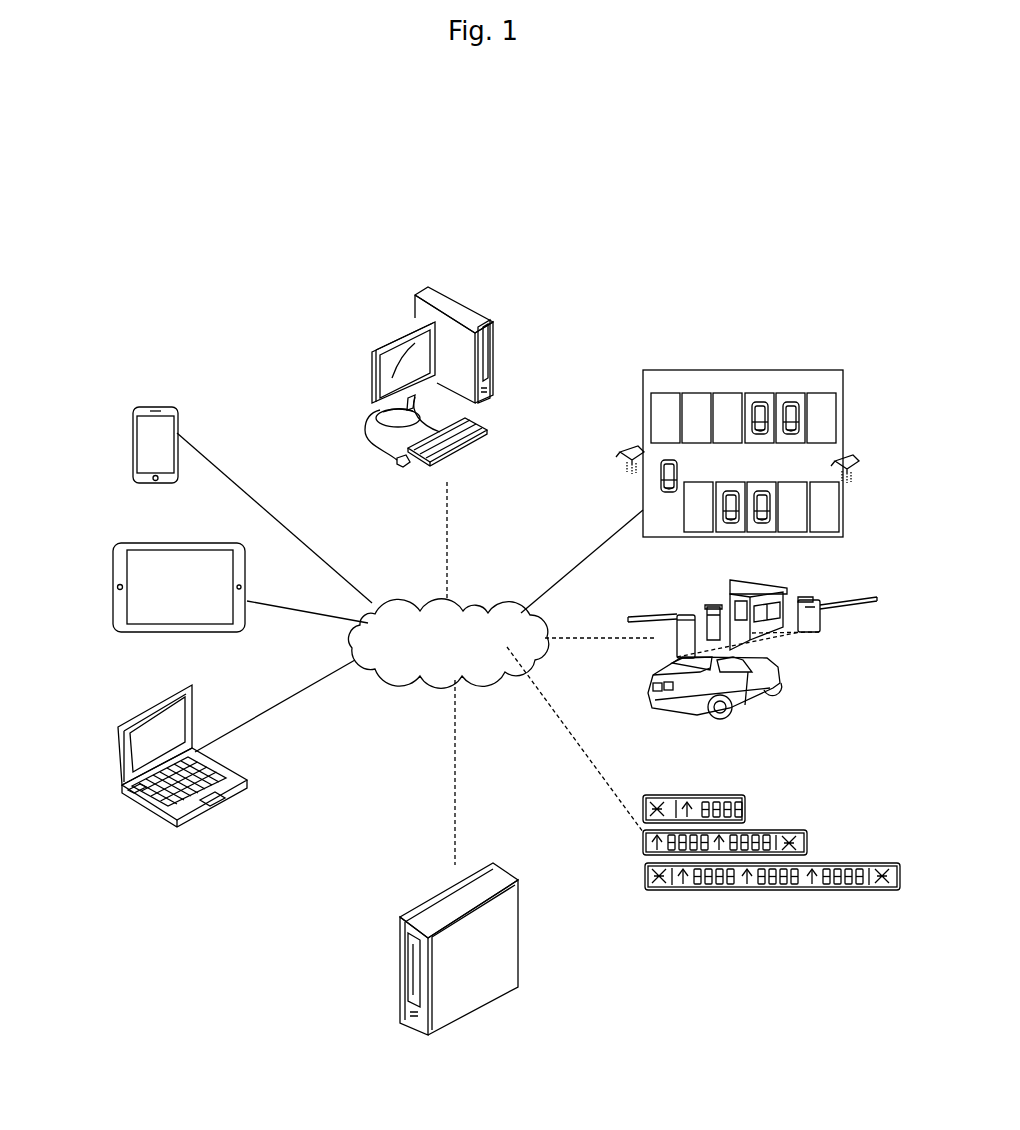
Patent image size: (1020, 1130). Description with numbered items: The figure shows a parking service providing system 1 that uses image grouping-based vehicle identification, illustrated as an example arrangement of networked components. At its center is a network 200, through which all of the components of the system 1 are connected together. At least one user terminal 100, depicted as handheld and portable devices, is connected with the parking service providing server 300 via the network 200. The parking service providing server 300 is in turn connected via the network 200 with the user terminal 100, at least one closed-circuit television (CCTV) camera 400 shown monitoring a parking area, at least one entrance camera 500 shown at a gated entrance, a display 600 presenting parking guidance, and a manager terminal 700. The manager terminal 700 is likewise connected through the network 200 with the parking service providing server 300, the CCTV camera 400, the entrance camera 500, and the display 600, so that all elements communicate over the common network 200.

The parking service providing system 1 is at (691, 204).
The user terminal 100 is at (93, 728).
The network 200 is at (512, 607).
The parking service providing server 300 is at (482, 982).
The closed-circuit television (CCTV) camera 400 is at (855, 455).
The entrance camera 500 is at (822, 616).
The display 600 is at (783, 822).
The manager terminal 700 is at (462, 303).